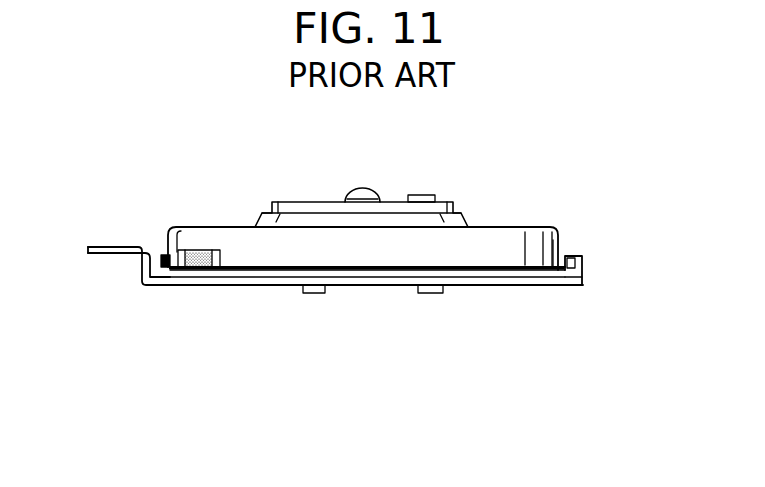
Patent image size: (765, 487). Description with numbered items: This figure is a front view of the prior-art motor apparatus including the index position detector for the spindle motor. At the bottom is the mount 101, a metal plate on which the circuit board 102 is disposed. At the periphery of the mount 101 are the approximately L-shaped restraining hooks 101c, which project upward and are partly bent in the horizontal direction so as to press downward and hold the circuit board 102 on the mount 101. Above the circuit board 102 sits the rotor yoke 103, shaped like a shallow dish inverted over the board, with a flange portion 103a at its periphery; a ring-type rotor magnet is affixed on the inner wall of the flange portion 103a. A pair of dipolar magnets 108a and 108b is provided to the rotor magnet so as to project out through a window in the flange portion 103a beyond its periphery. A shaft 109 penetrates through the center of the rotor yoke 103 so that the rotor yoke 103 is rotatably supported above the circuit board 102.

The mount 101 is at (365, 285).
The restraining hook 101c is at (165, 255).
The circuit board 102 is at (480, 270).
The rotor yoke 103 is at (523, 225).
The flange portion 103a is at (560, 242).
The dipolar magnet 108a is at (203, 252).
The dipolar magnet 108b is at (177, 250).
The shaft 109 is at (363, 192).